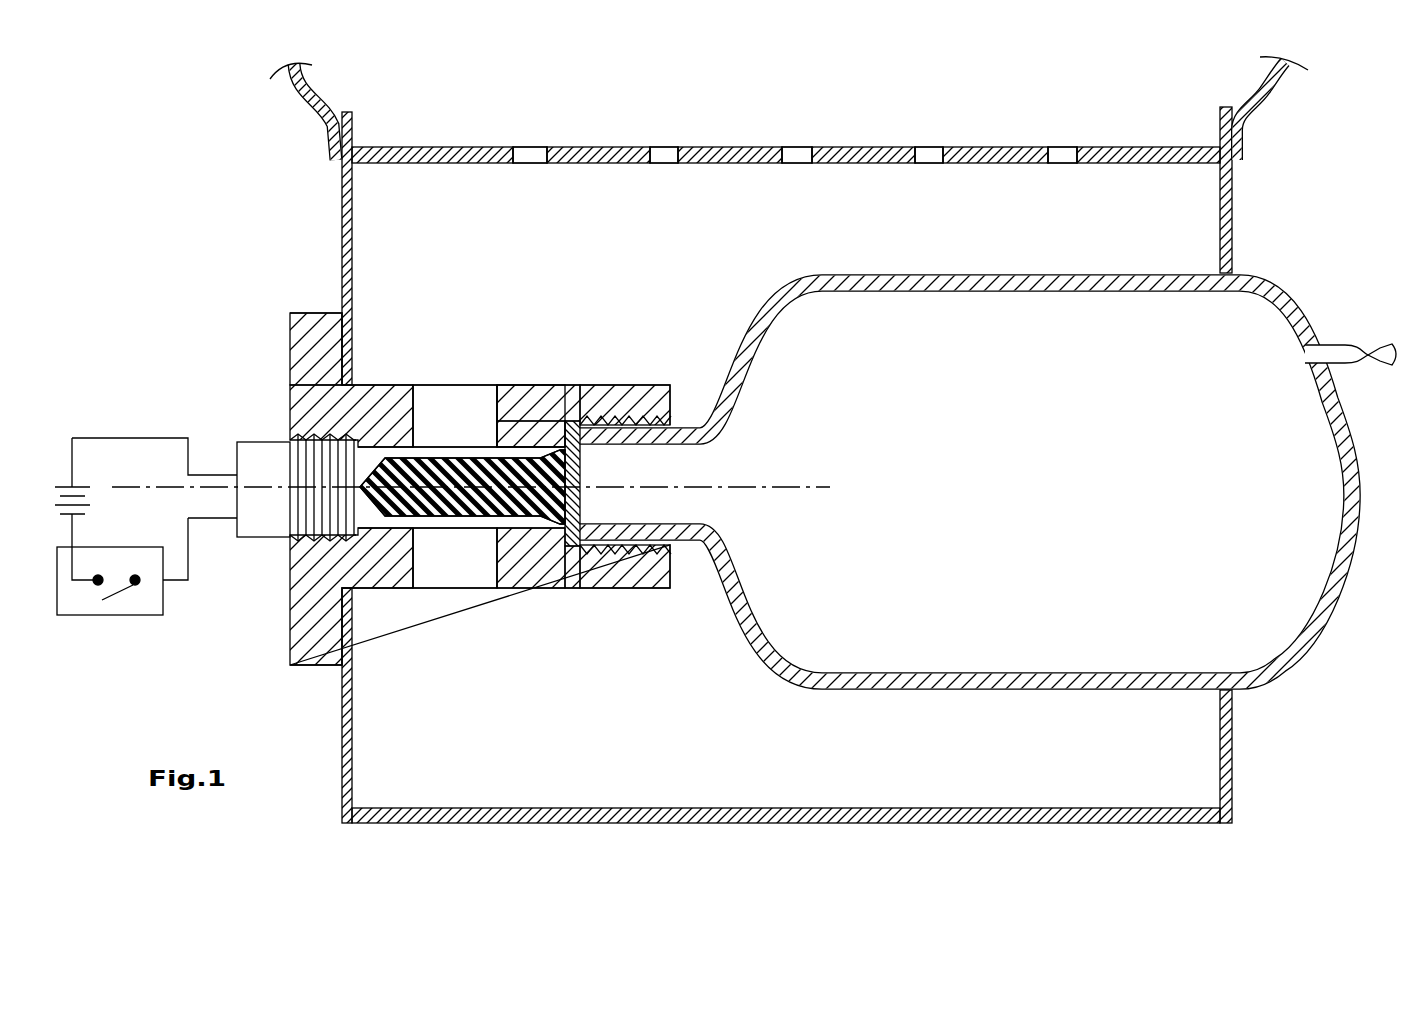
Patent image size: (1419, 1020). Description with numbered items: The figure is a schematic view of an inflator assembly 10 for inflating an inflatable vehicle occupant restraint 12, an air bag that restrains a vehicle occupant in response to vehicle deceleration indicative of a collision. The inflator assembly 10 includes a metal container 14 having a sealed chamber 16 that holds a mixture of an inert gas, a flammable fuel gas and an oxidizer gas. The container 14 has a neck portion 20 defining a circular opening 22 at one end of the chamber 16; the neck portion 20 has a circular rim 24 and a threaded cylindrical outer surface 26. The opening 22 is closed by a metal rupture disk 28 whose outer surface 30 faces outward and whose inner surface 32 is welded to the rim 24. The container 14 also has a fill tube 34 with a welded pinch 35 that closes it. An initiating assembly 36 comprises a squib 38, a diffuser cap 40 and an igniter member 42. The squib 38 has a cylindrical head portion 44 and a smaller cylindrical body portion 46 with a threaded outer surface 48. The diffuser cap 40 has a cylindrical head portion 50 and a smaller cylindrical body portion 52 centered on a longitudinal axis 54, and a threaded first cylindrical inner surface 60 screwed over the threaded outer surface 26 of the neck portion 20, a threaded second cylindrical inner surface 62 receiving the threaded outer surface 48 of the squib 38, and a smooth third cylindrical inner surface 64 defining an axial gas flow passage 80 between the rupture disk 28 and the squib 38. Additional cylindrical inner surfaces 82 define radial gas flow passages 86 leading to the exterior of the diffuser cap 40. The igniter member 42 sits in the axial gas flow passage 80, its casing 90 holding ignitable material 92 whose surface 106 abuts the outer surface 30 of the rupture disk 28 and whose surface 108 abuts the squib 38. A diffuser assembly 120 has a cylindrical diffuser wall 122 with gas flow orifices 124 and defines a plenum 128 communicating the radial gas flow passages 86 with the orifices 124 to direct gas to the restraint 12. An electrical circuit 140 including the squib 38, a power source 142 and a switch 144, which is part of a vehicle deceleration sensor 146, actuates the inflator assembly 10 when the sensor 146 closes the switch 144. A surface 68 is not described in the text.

The inflator assembly 10 is at (198, 140).
The inflatable vehicle occupant restraint 12 is at (290, 72).
The metal container 14 is at (1262, 276).
The sealed chamber 16 is at (1243, 357).
The neck portion 20 is at (602, 438).
The circular opening 22 is at (592, 463).
The circular rim 24 is at (567, 428).
The threaded cylindrical outer surface 26 is at (638, 428).
The rupture disk 28 is at (575, 488).
The outer surface 30 is at (520, 555).
The inner surface 32 is at (575, 505).
The fill tube 34 is at (1335, 345).
The pinch 35 is at (1371, 342).
The initiating assembly 36 is at (245, 298).
The squib 38 is at (243, 433).
The diffuser cap 40 is at (288, 385).
The igniter member 42 is at (385, 445).
The cylindrical head portion 44 is at (243, 444).
The cylindrical body portion 46 is at (265, 476).
The threaded outer surface 48 is at (302, 585).
The cylindrical head portion 50 is at (320, 325).
The cylindrical body portion 52 is at (518, 385).
The longitudinal axis 54 is at (805, 487).
The first cylindrical inner surface 60 is at (640, 575).
The second cylindrical inner surface 62 is at (345, 520).
The third cylindrical inner surface 64 is at (480, 540).
The passage 68 is at (588, 555).
The axial gas flow passage 80 is at (448, 520).
The additional cylindrical inner surfaces 82 is at (468, 445).
The radial gas flow passages 86 is at (447, 390).
The casing 90 is at (437, 470).
The ignitable material 92 is at (468, 470).
The surface 106 is at (663, 438).
The surface 108 is at (325, 490).
The diffuser assembly 120 is at (338, 257).
The cylindrical diffuser wall 122 is at (460, 164).
The gas flow orifices 124 is at (667, 147).
The plenum 128 is at (749, 231).
The electrical circuit 140 is at (130, 436).
The power source 142 is at (68, 485).
The switch 144 is at (123, 598).
The vehicle deceleration sensor 146 is at (57, 592).